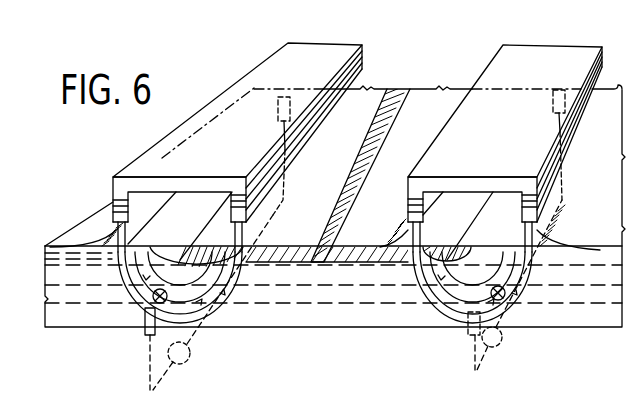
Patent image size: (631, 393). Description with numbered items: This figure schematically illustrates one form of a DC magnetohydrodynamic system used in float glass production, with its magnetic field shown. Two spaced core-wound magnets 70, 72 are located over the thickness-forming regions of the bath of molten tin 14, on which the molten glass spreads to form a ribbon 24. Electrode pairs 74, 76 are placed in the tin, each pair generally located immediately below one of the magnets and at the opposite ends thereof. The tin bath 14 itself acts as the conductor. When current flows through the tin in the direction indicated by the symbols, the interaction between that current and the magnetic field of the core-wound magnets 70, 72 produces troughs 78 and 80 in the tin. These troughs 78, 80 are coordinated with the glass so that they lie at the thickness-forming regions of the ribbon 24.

The bath of molten tin 14 is at (592, 252).
The ribbon 24 is at (338, 238).
The core-wound magnet 70 is at (167, 138).
The core-wound magnet 72 is at (450, 128).
The electrode pair 74 is at (143, 318).
The electrode pair 76 is at (278, 96).
The trough 78 is at (156, 262).
The trough 80 is at (490, 264).